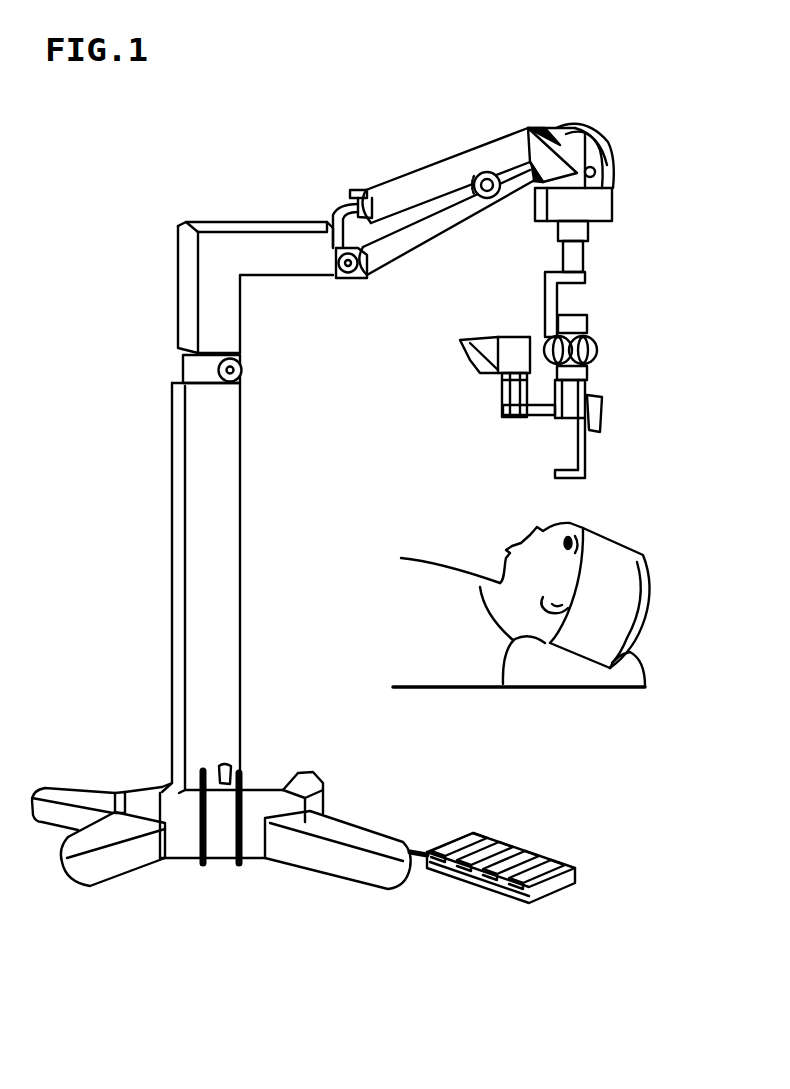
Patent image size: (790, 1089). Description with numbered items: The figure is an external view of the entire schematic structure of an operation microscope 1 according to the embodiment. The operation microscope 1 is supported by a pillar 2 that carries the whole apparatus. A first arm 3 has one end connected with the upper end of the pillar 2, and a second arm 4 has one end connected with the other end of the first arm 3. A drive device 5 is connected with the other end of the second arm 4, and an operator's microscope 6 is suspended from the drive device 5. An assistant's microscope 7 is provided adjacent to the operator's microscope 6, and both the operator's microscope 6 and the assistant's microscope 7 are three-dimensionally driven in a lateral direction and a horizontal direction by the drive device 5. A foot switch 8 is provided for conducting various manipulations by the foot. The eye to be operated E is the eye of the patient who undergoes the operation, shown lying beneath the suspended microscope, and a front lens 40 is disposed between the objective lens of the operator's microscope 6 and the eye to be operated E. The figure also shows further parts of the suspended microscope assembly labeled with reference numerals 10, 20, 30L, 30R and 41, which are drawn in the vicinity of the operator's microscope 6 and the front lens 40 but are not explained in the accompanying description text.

The operation microscope 1 is at (152, 258).
The pillar 2 is at (196, 568).
The first arm 3 is at (248, 243).
The second arm 4 is at (436, 172).
The drive device 5 is at (600, 203).
The operator's microscope 6 is at (620, 398).
The assistant's microscope 7 is at (503, 377).
The foot switch 8 is at (511, 845).
The horizontal arm 10 is at (555, 422).
The body 20 is at (590, 383).
The left eyepiece lens 30L is at (550, 337).
The right eyepiece lens 30R is at (597, 337).
The front lens 40 is at (573, 483).
The rod 41 is at (588, 458).
The eye of a patient E is at (575, 528).